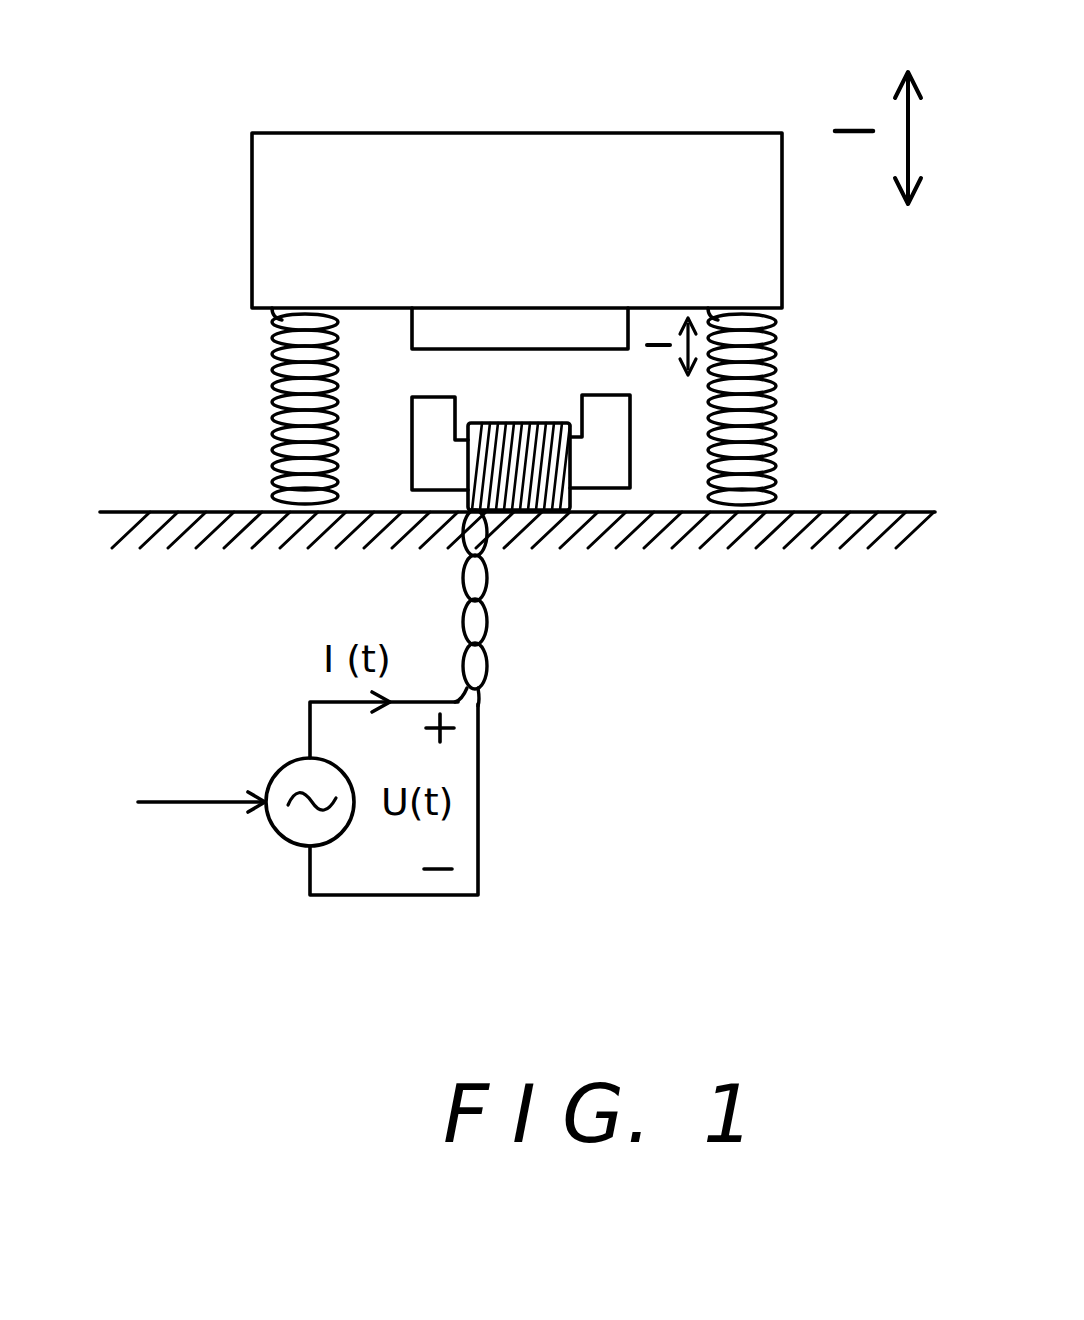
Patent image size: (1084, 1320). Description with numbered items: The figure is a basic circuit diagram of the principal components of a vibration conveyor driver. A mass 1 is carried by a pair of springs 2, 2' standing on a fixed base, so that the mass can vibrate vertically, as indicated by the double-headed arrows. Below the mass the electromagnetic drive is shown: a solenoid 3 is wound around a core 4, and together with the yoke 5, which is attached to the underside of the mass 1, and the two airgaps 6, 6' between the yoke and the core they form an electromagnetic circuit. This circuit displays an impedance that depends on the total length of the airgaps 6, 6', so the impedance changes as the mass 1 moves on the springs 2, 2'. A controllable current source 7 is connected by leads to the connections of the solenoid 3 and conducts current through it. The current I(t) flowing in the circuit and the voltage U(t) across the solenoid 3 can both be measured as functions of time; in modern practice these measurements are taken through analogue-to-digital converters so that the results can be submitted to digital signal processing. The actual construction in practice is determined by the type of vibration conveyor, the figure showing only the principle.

The mass 1 is at (337, 157).
The spring 2 is at (248, 406).
The spring 2' is at (800, 406).
The solenoid 3 is at (522, 477).
The core 4 is at (555, 498).
The yoke 5 is at (580, 320).
The airgap 6 is at (414, 433).
The airgap 6' is at (626, 429).
The current source 7 is at (283, 783).